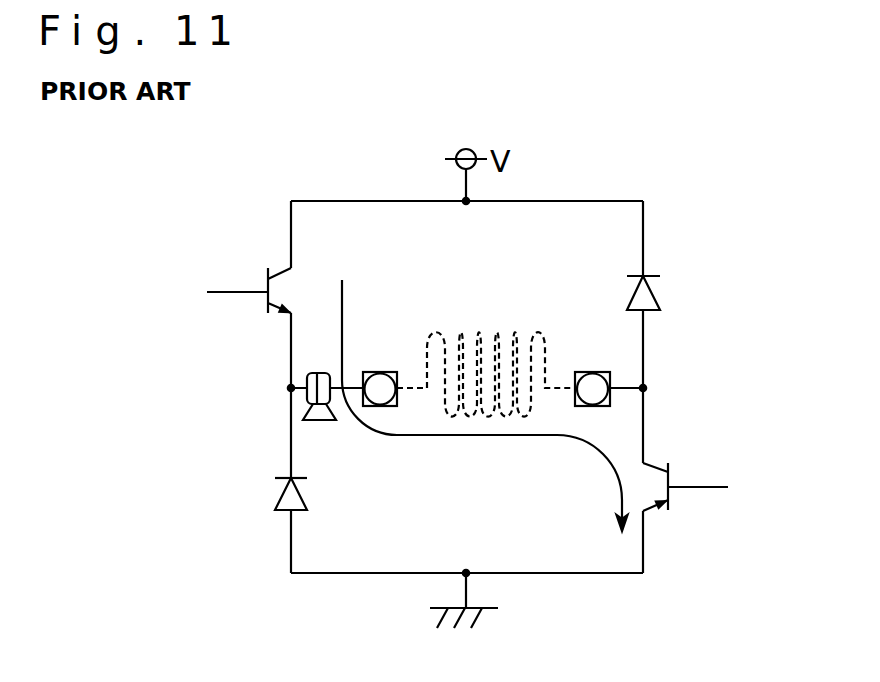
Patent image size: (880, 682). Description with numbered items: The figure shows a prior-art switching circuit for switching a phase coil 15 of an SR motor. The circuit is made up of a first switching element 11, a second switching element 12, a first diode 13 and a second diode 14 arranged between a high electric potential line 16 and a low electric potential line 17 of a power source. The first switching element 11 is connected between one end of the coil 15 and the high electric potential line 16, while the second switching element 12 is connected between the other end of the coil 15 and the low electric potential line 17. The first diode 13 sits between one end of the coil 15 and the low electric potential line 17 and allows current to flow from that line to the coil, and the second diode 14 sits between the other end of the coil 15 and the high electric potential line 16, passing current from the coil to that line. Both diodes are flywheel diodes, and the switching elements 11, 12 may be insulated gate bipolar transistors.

The first switching element 11 is at (260, 278).
The second switching element 12 is at (675, 472).
The first diode 13 is at (282, 503).
The second diode 14 is at (655, 293).
The phase coil 15 is at (509, 333).
The high electric potential line 16 is at (593, 201).
The low electric potential line 17 is at (572, 575).